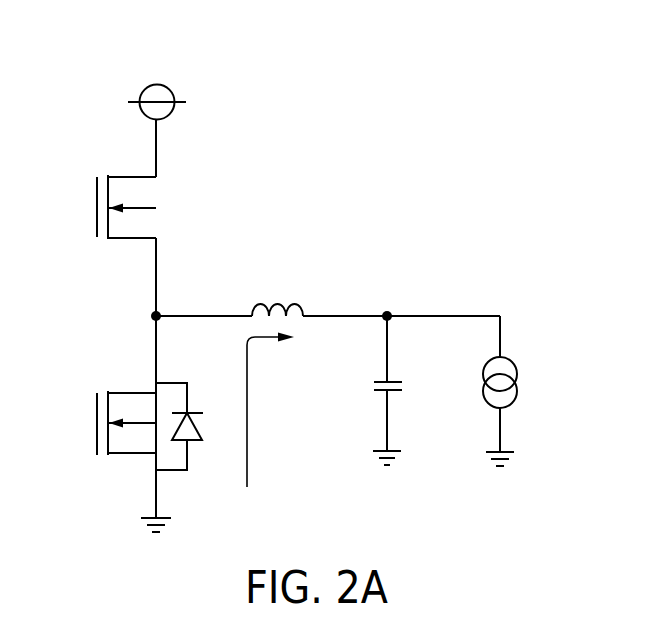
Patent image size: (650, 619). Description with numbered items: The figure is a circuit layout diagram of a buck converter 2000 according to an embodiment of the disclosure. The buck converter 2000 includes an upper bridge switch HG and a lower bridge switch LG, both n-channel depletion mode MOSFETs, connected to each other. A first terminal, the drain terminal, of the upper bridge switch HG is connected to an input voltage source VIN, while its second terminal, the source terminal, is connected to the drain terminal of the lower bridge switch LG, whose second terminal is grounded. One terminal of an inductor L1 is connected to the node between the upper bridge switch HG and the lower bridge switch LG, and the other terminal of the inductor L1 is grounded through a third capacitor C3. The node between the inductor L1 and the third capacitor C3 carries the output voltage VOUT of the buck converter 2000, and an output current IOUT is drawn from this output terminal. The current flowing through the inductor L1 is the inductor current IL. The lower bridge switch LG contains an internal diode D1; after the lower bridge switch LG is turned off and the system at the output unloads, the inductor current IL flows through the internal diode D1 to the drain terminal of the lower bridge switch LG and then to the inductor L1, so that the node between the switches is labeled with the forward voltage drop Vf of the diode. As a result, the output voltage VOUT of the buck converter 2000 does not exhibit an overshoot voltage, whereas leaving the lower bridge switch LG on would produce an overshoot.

The buck converter 2000 is at (418, 49).
The input voltage source VIN is at (157, 84).
The upper bridge switch HG is at (97, 208).
The lower bridge switch LG is at (97, 423).
The forward voltage node (-Vf) Vf is at (200, 298).
The internal diode D1 is at (190, 431).
The inductor L1 is at (277, 291).
The inductor current IL is at (270, 410).
The third capacitor C3 is at (370, 390).
The output voltage VOUT is at (459, 319).
The output current IOUT is at (542, 353).